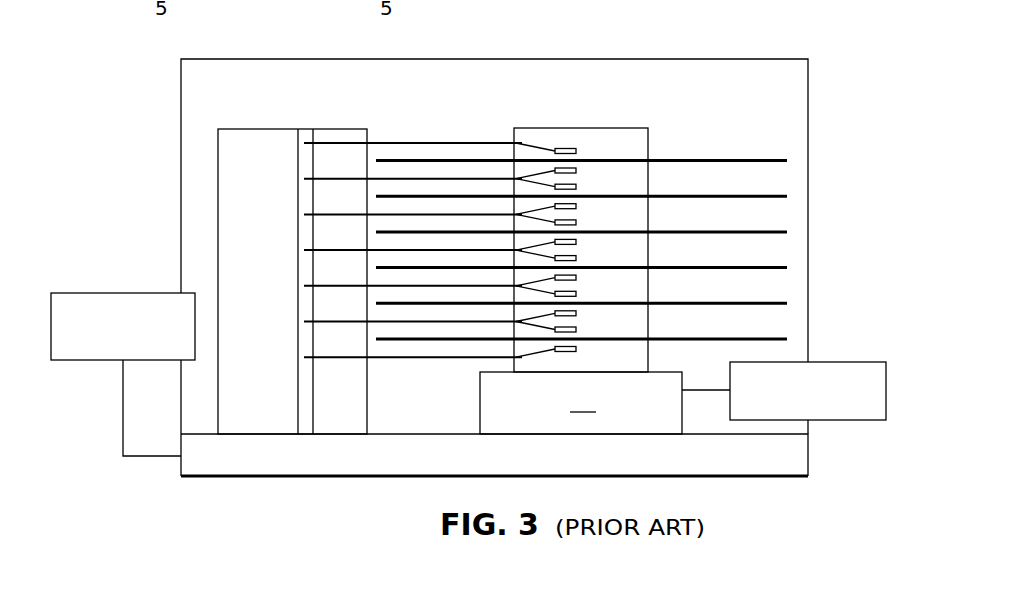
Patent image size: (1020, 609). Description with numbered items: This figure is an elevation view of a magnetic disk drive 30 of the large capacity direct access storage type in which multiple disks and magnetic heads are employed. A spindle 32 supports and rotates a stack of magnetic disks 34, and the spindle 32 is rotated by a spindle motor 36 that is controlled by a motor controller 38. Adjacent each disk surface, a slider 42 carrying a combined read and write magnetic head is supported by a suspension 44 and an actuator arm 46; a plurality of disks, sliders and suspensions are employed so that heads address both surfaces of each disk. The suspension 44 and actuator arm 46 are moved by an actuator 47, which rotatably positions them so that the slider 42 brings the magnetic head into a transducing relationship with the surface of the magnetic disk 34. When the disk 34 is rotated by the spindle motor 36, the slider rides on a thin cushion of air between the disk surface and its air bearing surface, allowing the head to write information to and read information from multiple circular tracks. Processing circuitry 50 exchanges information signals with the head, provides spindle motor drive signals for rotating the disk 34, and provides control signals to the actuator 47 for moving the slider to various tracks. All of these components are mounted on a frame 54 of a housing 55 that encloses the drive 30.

The magnetic disk drive 30 is at (697, 132).
The spindle 32 is at (636, 128).
The magnetic disk 34 is at (786, 162).
The spindle motor 36 is at (581, 403).
The motor controller 38 is at (843, 421).
The slider 42 is at (577, 170).
The suspension 44 is at (545, 178).
The actuator arm 46 is at (487, 179).
The actuator 47 is at (248, 129).
The processing circuitry 50 is at (93, 292).
The frame 54 is at (233, 480).
The housing 55 is at (720, 59).